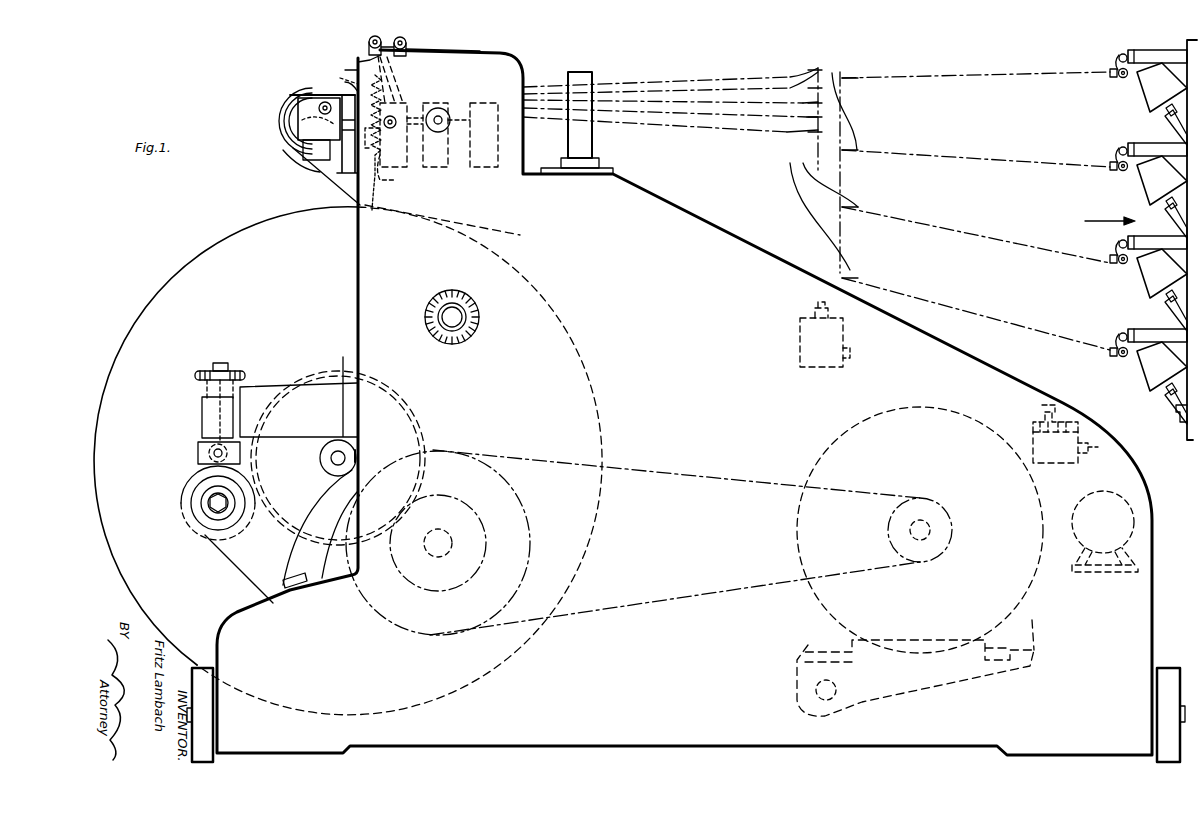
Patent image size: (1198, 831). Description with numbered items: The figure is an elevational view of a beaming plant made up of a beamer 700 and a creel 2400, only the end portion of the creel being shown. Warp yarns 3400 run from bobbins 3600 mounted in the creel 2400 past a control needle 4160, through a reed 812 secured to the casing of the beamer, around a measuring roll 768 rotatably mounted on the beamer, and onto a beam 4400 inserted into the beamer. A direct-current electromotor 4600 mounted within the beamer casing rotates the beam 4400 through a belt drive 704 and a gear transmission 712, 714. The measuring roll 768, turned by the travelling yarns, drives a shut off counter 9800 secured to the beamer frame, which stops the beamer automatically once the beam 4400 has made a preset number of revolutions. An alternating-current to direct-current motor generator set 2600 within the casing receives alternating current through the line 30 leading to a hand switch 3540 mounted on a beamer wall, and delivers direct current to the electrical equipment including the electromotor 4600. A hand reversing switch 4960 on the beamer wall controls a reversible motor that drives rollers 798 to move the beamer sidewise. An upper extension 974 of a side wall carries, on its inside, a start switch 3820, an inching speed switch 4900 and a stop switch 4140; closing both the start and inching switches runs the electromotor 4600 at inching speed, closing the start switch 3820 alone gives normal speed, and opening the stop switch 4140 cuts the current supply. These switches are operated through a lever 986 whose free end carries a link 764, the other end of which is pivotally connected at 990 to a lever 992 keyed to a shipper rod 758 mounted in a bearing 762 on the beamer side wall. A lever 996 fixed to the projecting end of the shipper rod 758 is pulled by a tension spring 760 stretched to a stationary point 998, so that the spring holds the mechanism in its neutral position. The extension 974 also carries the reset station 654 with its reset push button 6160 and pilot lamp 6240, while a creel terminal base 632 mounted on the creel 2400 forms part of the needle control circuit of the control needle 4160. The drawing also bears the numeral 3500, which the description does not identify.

The line 30 is at (1088, 456).
The creel terminal base 632 is at (1180, 425).
The reset station 654 is at (290, 94).
The beamer 700 is at (725, 224).
The belt drive 704 is at (694, 470).
The gear transmission 712 is at (480, 530).
The gear transmission 714 is at (421, 432).
The shipper rod 758 is at (369, 40).
The tension spring 760 is at (300, 98).
The bearing 762 is at (368, 55).
The link 764 is at (402, 80).
The measuring roll 768 is at (323, 165).
The rollers 798 is at (205, 690).
The reed 812 is at (592, 140).
The upper extension of side wall 974 is at (512, 57).
The lever 986 is at (418, 108).
The pivotal connection 990 is at (440, 48).
The lever 992 is at (406, 43).
The lever 996 is at (340, 78).
The stationary point 998 is at (372, 206).
The creel 2400 is at (1106, 213).
The A. C. to D. C. motor generator set 2600 is at (1138, 518).
The warp yarns 3400 is at (862, 75).
The gear 3500 is at (460, 318).
The hand switch 3540 is at (1080, 412).
The bobbins 3600 is at (1150, 88).
The start switch 3820 is at (398, 192).
The stop switch 4140 is at (492, 170).
The control needle 4160 is at (1118, 64).
The beam 4400 is at (148, 306).
The D. C. electromotor 4600 is at (922, 408).
The inching speed switch 4900 is at (450, 164).
The hand reversing switch 4960 is at (846, 343).
The reset push button 6160 is at (348, 84).
The pilot lamp 6240 is at (350, 66).
The shut off counter 9800 is at (300, 130).